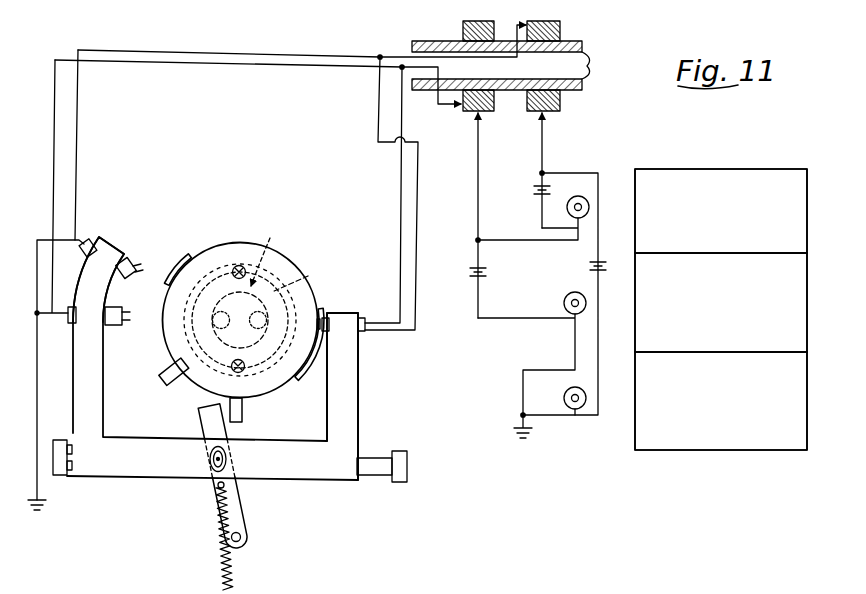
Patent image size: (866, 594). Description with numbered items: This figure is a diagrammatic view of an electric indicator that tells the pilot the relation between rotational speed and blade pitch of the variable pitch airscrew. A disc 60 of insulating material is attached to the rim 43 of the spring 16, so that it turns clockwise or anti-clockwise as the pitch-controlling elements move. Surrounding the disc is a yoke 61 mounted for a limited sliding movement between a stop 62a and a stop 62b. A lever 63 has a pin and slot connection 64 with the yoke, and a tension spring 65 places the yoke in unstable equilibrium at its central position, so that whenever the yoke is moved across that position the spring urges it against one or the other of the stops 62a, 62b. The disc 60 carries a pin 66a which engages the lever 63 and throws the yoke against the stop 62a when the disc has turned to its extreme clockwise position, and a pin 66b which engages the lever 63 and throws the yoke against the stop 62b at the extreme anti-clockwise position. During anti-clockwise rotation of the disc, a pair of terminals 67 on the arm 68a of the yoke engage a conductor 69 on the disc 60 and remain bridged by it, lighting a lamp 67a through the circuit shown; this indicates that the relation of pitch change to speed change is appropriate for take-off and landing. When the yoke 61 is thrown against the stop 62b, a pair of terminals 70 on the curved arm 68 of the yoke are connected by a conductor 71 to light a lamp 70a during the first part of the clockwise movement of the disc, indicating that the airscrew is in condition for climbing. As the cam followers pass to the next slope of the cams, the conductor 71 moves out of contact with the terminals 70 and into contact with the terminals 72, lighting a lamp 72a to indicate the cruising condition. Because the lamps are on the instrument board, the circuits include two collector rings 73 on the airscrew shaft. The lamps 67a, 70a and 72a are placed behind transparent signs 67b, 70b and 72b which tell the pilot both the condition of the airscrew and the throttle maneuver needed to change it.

The spring 16 is at (265, 250).
The rim 43 is at (303, 275).
The disc 60 is at (285, 265).
The yoke 61 is at (313, 472).
The stop 62a is at (60, 473).
The stop 62b is at (399, 482).
The lever 63 is at (237, 504).
The pin and slot connection 64 is at (227, 457).
The tension spring 65 is at (232, 566).
The pin 66a is at (243, 408).
The pin 66b is at (160, 384).
The terminals 67 is at (325, 314).
The lamp 67a is at (586, 196).
The transparent sign 67b is at (812, 166).
The arm 68 is at (83, 379).
The arm 68a is at (343, 383).
The conductor 69 is at (305, 380).
The terminals 70 is at (131, 316).
The lamp 70a is at (564, 300).
The transparent sign 70b is at (635, 338).
The conductor 71 is at (189, 255).
The terminals 72 is at (144, 272).
The lamp 72a is at (565, 404).
The transparent sign 72b is at (780, 440).
The collector rings 73 is at (490, 113).